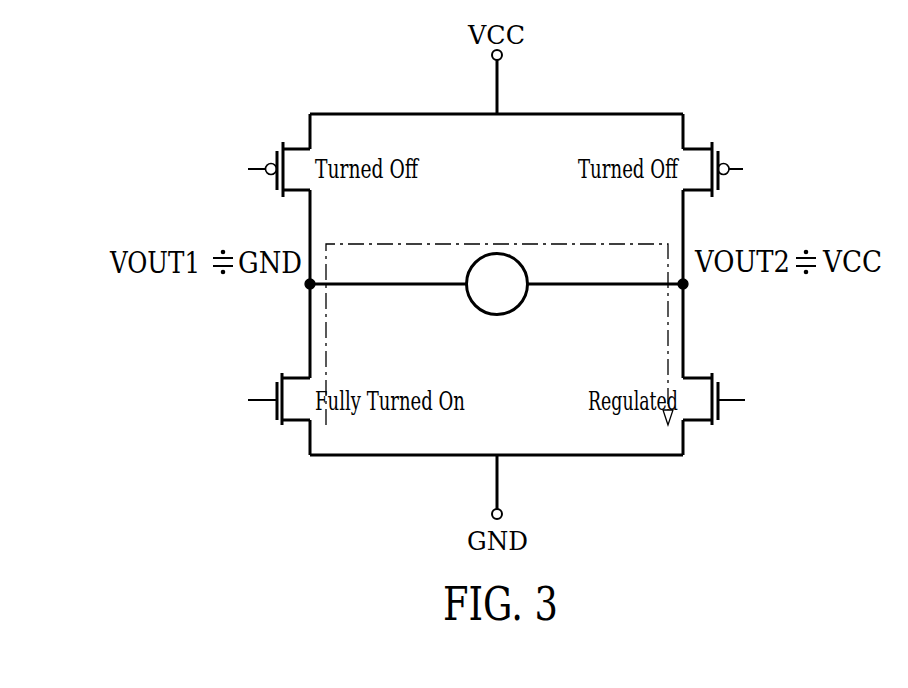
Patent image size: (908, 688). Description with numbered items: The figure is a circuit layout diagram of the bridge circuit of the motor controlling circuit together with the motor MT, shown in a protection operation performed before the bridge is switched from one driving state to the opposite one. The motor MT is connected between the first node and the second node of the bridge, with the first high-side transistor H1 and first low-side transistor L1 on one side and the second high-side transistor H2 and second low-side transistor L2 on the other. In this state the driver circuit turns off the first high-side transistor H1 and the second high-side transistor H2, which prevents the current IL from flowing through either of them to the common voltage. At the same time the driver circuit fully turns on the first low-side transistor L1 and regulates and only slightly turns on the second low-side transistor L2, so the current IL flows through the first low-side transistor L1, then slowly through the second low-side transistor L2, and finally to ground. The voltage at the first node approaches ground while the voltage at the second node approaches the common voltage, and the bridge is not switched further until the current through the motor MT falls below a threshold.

The first high-side transistor H1 is at (275, 152).
The second high-side transistor H2 is at (723, 153).
The first low-side transistor L1 is at (272, 412).
The second low-side transistor L2 is at (720, 412).
The motor MT is at (497, 315).
The current IL is at (499, 319).